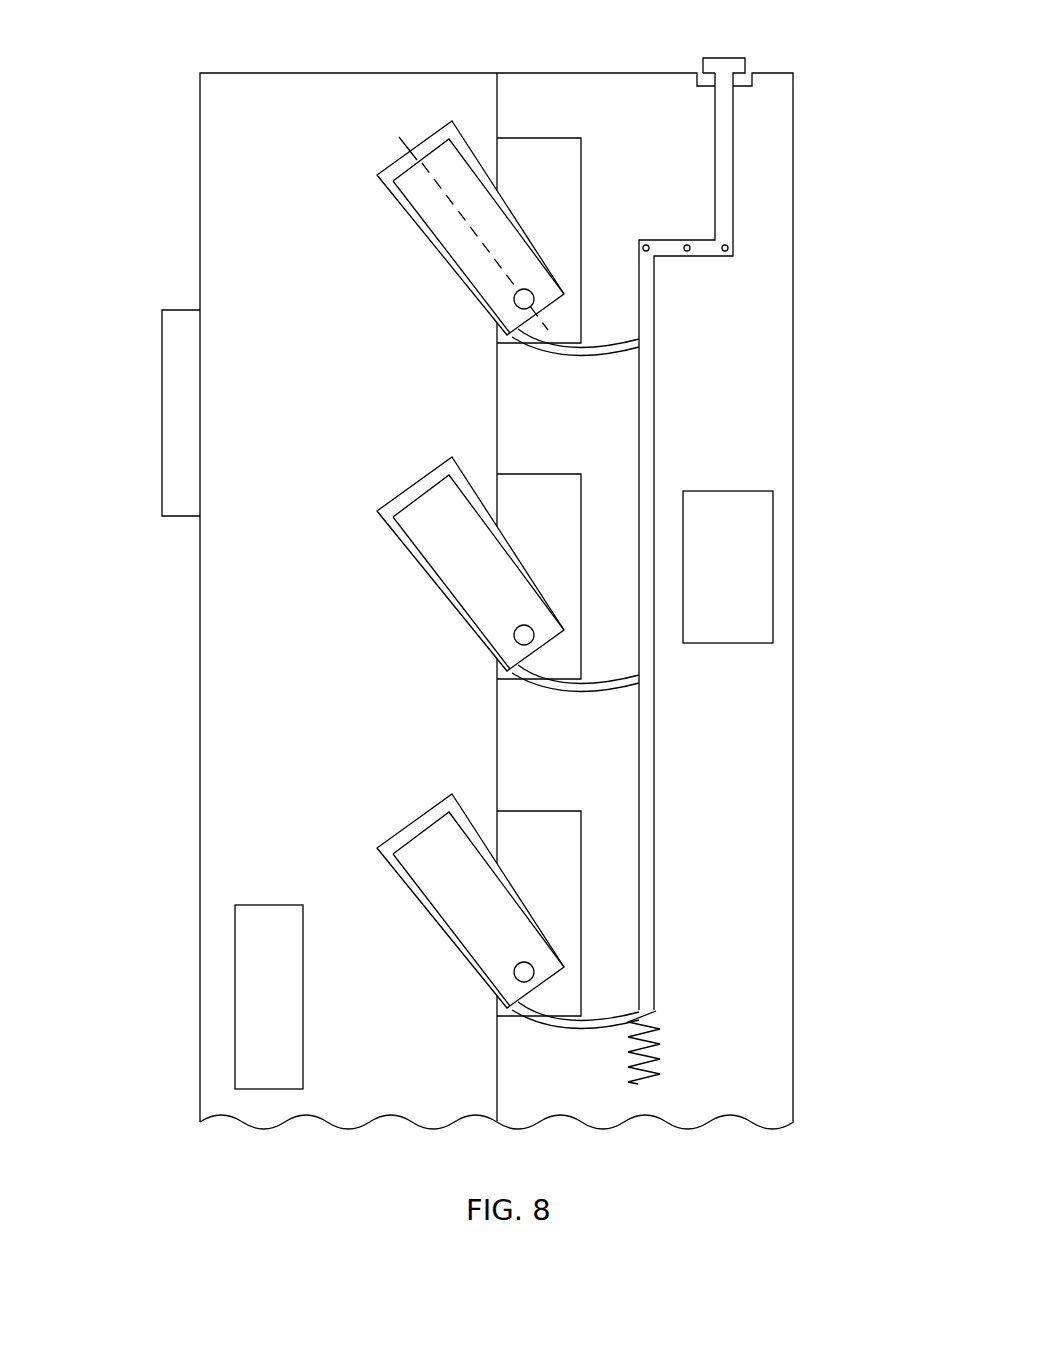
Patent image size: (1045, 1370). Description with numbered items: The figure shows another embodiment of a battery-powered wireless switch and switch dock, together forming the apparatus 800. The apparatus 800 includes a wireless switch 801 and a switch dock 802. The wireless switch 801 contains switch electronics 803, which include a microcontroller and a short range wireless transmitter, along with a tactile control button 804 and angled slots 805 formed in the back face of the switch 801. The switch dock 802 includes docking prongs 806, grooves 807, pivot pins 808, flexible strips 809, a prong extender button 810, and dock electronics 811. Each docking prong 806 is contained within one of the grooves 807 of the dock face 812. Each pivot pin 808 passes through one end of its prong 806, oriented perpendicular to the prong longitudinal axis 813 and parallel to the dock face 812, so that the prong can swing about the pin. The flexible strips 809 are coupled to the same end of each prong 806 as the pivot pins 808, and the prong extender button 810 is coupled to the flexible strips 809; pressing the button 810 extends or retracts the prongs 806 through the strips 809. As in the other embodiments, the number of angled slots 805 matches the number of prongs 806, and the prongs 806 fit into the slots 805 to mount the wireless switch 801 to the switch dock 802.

The apparatus 800 is at (163, 62).
The wireless switch 801 is at (200, 1072).
The switch dock 802 is at (795, 334).
The switch electronics 803 is at (293, 1009).
The tactile control button 804 is at (162, 402).
The angled slots 805 is at (424, 244).
The docking prongs 806 is at (410, 201).
The grooves 807 is at (568, 206).
The pivot pins 808 is at (514, 302).
The flexible strips 809 is at (612, 335).
The prong extender button 810 is at (722, 58).
The dock electronics 811 is at (755, 586).
The dock face 812 is at (497, 1078).
The prong longitudinal axis 813 is at (405, 147).